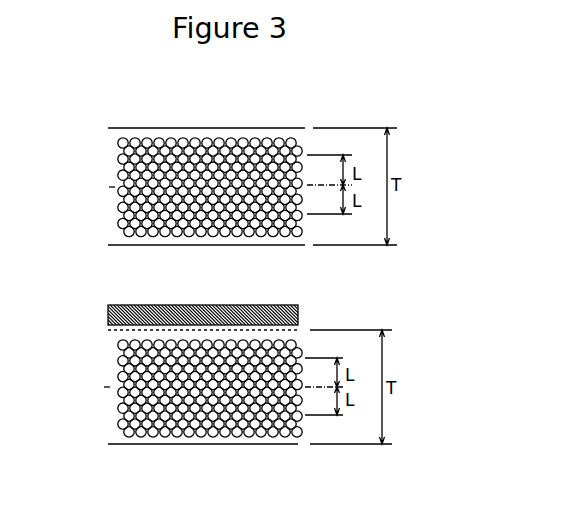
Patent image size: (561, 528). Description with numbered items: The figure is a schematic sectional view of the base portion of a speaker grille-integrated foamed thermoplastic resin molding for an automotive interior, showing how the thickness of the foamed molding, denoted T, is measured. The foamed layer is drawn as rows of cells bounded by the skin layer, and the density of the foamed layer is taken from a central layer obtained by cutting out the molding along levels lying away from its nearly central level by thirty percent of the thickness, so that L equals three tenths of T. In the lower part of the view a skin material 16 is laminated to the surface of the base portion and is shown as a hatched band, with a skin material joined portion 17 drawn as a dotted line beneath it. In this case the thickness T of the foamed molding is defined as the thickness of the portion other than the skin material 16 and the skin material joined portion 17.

The skin material 16 is at (298, 312).
The skin material joined portion 17 is at (298, 327).